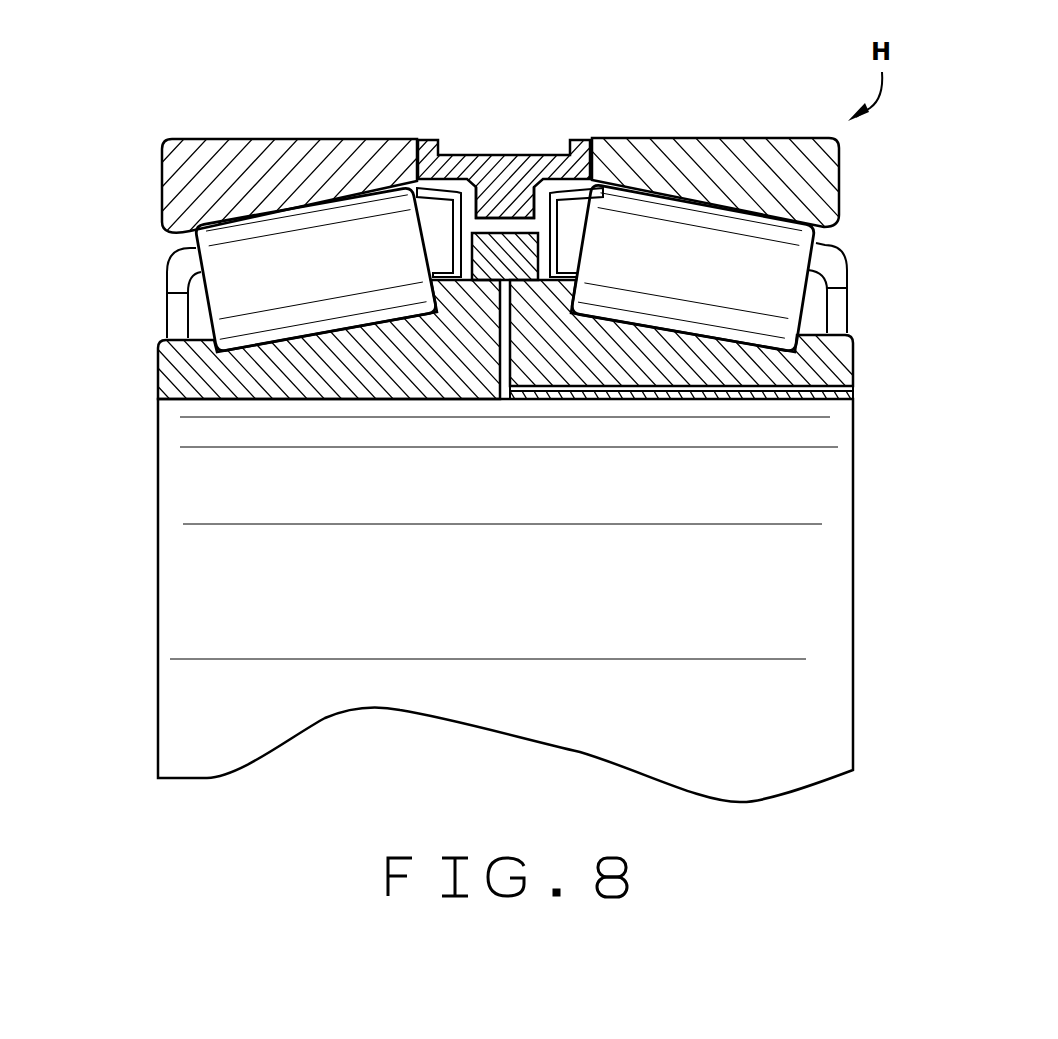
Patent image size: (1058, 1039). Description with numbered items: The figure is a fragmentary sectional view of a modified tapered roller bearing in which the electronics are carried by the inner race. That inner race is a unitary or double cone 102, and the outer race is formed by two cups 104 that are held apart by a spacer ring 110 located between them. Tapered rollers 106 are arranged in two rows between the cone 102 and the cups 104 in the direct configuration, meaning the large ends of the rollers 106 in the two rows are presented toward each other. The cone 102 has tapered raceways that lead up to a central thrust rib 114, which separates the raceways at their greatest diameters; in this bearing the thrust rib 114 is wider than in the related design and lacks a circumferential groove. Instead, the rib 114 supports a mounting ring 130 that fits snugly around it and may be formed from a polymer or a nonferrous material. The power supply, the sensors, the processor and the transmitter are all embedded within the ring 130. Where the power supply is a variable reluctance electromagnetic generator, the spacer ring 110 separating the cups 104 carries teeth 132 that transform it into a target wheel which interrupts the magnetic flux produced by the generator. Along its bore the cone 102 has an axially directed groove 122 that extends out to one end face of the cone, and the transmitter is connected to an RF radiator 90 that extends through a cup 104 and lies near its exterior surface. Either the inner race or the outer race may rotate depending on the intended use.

The RF radiator 90 is at (814, 398).
The double cone 102 is at (303, 383).
The cups 104 is at (288, 176).
The tapered rollers 106 is at (293, 265).
The spacer ring 110 is at (500, 163).
The thrust rib 114 is at (543, 345).
The axial groove 122 is at (737, 398).
The mounting ring 130 is at (510, 254).
The teeth 132 is at (523, 208).